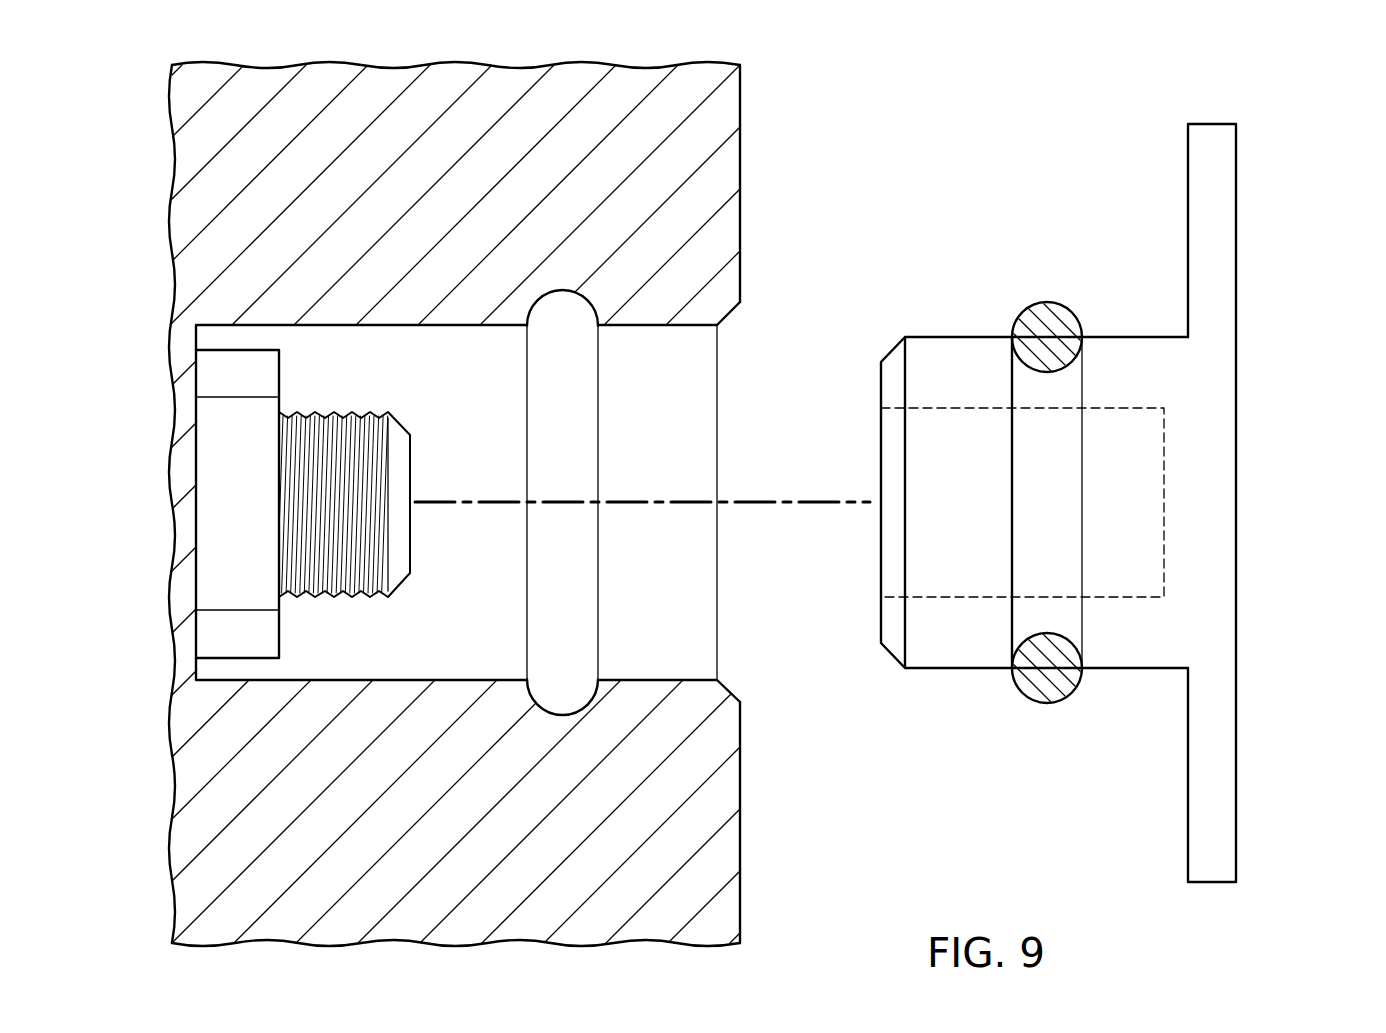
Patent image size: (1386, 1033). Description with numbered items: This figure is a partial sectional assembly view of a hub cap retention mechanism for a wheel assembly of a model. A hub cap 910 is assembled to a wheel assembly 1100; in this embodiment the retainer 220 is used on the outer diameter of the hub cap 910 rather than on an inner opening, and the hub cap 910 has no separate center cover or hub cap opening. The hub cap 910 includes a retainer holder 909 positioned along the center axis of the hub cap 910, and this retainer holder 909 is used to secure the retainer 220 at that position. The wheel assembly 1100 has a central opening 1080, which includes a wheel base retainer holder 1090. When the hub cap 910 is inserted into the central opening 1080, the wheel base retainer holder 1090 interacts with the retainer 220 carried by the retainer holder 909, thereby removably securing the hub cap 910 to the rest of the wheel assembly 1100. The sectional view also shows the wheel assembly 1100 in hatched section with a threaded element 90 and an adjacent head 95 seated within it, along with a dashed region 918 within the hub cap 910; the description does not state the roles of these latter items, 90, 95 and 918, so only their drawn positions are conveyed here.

The wheel assembly 1100 is at (742, 163).
The central opening 1080 is at (637, 327).
The wheel base retainer holder 1090 is at (572, 708).
The fastener head 95 is at (222, 478).
The threaded stud 90 is at (413, 457).
The retainer holder 909 is at (1020, 468).
The hub cap 910 is at (1238, 325).
The retainer 220 is at (1048, 704).
The internal cavity 918 is at (1164, 507).